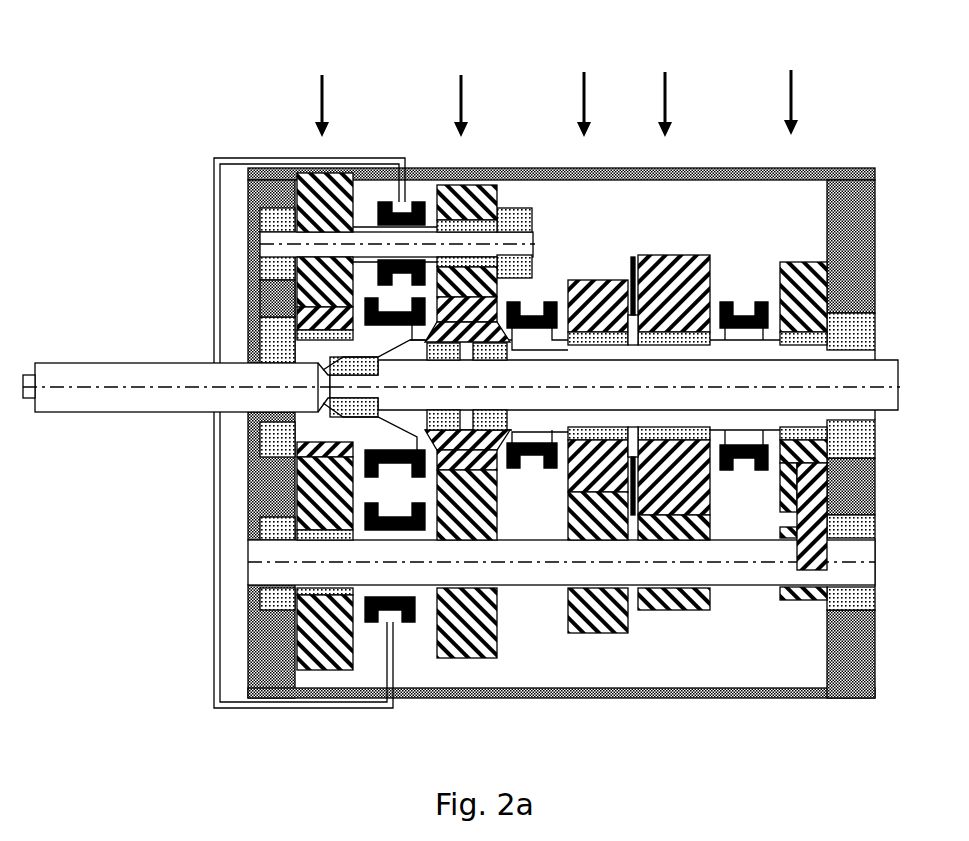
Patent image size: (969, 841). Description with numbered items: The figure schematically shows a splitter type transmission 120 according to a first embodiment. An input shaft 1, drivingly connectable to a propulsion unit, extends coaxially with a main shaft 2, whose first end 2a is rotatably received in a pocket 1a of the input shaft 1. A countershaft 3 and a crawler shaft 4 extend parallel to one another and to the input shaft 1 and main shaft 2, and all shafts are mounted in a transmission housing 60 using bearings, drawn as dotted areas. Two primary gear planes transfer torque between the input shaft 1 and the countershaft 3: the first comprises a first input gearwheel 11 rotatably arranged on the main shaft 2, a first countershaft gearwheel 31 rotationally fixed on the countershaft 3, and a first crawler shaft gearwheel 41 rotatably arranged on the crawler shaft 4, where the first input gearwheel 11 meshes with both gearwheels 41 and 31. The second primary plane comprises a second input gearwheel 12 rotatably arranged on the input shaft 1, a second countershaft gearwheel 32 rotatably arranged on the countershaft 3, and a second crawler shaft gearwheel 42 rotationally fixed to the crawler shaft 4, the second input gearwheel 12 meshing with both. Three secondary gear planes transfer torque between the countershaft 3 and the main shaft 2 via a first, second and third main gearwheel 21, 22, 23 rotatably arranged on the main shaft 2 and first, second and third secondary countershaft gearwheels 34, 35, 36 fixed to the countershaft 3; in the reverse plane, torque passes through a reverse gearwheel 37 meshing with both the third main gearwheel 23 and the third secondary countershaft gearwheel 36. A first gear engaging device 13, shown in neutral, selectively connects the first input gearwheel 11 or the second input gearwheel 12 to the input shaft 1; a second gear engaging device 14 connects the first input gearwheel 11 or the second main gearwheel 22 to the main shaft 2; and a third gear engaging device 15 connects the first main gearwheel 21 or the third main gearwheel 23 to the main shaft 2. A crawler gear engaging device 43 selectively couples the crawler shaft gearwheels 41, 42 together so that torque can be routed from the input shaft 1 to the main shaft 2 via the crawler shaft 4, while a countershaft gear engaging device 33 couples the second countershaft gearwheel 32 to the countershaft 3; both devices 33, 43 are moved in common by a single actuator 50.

The transmission 120 is at (218, 94).
The crawler shaft 4 is at (269, 177).
The second crawler shaft gearwheel 42 is at (336, 172).
The crawler gear engaging device 43 is at (417, 200).
The pocket 1a is at (411, 345).
The first crawler shaft gearwheel 41 is at (475, 178).
The first input gearwheel 11 is at (500, 294).
The second main gearwheel 22 is at (590, 280).
The first main gearwheel 21 is at (668, 256).
The third gear engaging device 15 is at (742, 302).
The third main gearwheel 23 is at (803, 262).
The transmission housing 60 is at (843, 172).
The first gear engaging device 13 is at (276, 275).
The second input gearwheel 12 is at (263, 316).
The input shaft 1 is at (92, 375).
The first end of the main shaft 2a is at (318, 376).
The main shaft 2 is at (755, 380).
The single actuator 50 is at (213, 470).
The countershaft 3 is at (248, 551).
The second gear engaging device 14 is at (537, 470).
The reverse gearwheel 37 is at (782, 488).
The second countershaft gearwheel 32 is at (300, 650).
The countershaft gear engaging device 33 is at (405, 625).
The first countershaft gearwheel 31 is at (488, 640).
The second secondary countershaft gearwheel 35 is at (612, 633).
The first secondary countershaft gearwheel 34 is at (692, 610).
The third secondary countershaft gearwheel 36 is at (790, 600).